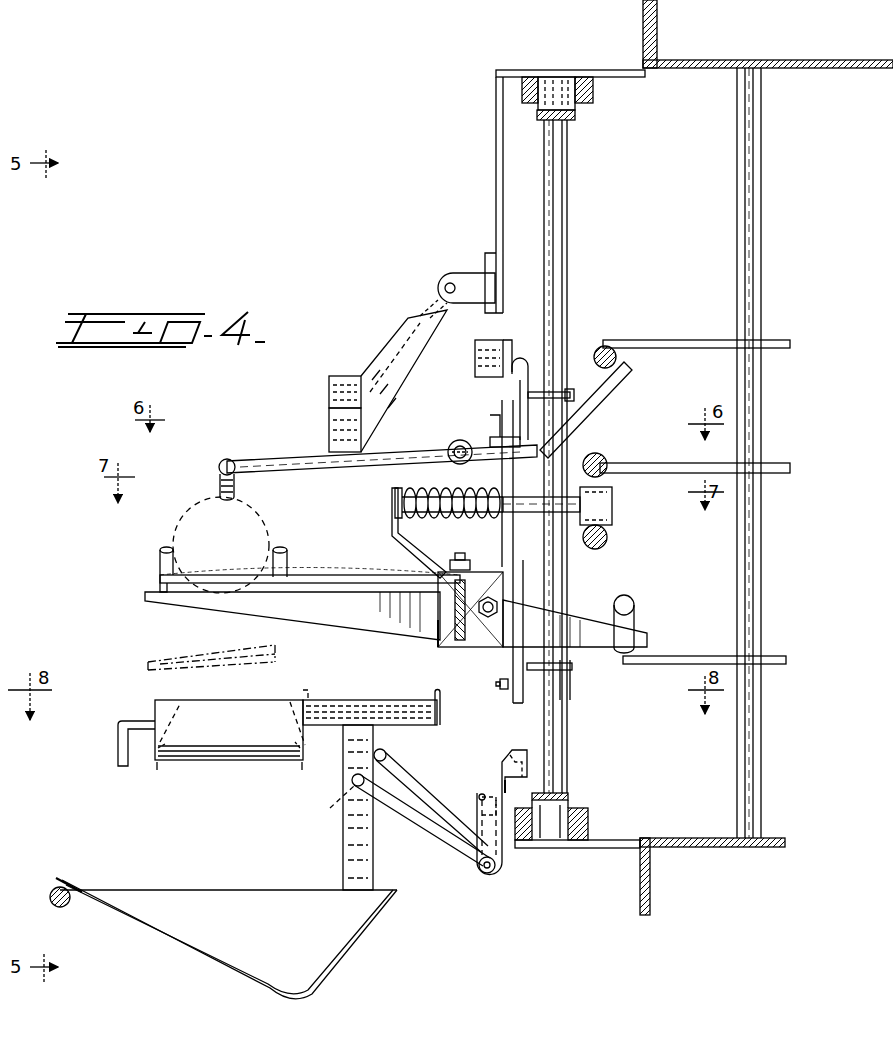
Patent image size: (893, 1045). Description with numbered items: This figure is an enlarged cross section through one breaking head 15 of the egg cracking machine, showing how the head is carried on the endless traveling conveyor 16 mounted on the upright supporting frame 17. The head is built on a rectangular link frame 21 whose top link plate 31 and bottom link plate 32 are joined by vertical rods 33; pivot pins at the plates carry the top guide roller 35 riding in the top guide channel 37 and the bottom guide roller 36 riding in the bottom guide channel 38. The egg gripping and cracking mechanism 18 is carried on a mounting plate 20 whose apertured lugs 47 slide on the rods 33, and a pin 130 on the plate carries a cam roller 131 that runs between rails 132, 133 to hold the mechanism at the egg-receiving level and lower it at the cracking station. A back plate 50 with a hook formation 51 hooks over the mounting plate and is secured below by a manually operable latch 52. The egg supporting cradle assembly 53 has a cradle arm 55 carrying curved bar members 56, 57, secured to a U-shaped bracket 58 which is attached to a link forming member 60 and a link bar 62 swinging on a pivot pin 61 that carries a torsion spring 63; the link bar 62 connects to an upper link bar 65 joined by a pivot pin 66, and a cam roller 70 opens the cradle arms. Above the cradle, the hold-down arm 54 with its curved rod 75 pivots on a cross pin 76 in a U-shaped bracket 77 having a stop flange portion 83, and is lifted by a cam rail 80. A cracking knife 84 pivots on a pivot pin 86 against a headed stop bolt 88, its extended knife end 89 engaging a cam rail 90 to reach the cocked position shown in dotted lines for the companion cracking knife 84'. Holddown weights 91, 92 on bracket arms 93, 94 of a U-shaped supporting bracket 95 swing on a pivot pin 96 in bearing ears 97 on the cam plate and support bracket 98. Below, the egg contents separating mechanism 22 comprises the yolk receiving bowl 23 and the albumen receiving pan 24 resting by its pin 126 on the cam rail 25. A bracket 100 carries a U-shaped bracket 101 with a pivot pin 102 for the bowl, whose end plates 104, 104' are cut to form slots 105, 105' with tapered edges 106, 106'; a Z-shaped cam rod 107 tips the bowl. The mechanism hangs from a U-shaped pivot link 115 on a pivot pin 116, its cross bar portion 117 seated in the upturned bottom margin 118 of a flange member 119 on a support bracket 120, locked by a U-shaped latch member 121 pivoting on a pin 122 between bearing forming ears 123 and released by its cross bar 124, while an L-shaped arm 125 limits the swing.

The breaking head 15 is at (396, 293).
The endless traveling conveyor 16 is at (515, 118).
The upright supporting frame 17 is at (645, 24).
The egg gripping and cracking mechanism 18 is at (232, 447).
The mounting plate 20 is at (530, 382).
The rectangular link frame 21 is at (560, 270).
The egg contents separating mechanism 22 is at (138, 711).
The yolk receiving bowl 23 is at (285, 700).
The albumen receiving pan 24 is at (275, 889).
The cam rail 25 is at (54, 900).
The top link plate 31 is at (568, 120).
The bottom link plate 32 is at (568, 796).
The vertical rods 33 is at (564, 196).
The top guide roller 35 is at (553, 78).
The bottom guide roller 36 is at (547, 832).
The top guide channel 37 is at (528, 77).
The bottom guide channel 38 is at (578, 842).
The apertured lugs 47 is at (570, 392).
The back plate 50 is at (528, 394).
The hook formation 51 is at (528, 364).
The manually operable latch 52 is at (502, 690).
The egg supporting cradle assembly 53 is at (156, 580).
The hold-down arm 54 is at (268, 462).
The cradle arm 55 is at (345, 577).
The curved bar member 56 is at (160, 560).
The curved bar member 57 is at (287, 560).
The U-shaped bracket 58 is at (456, 592).
The link forming member 60 is at (412, 546).
The pivot pin 61 is at (445, 519).
The link bar 62 is at (492, 552).
The torsion spring 63 is at (440, 497).
The link bar 65 is at (512, 352).
The pivot pin 66 is at (500, 420).
The cam roller 70 is at (476, 382).
The curved rod 75 is at (220, 486).
The cross pin 76 is at (448, 450).
The U-shaped bracket 77 is at (456, 444).
The cam rail 80 is at (612, 352).
The flange portion 83 is at (503, 440).
The cracking knife 84 is at (292, 619).
The cracking knife 84' is at (211, 644).
The pivot pin 86 is at (488, 618).
The headed stop bolt 88 is at (438, 638).
The knife end 89 is at (600, 612).
The cam rail 90 is at (634, 615).
The holddown weight 91 is at (329, 394).
The holddown weight 92 is at (329, 430).
The bracket arm 93 is at (384, 360).
The bracket arm 94 is at (410, 378).
The U-shaped supporting bracket 95 is at (440, 292).
The pivot pin 96 is at (449, 284).
The bearing ear 97 is at (467, 305).
The cam plate and support bracket 98 is at (496, 201).
The bracket 100 is at (347, 834).
The U-shaped bracket 101 is at (440, 700).
The pivot pin 102 is at (406, 701).
The end plate 104 is at (188, 723).
The end plate 104' is at (272, 723).
The slot 105 is at (144, 760).
The slot 105' is at (318, 746).
The tapered edge 106 is at (155, 782).
The tapered edge 106' is at (299, 773).
The Z-shaped cam rod 107 is at (118, 758).
The U-shaped pivot link 115 is at (424, 826).
The pivot pin 116 is at (330, 808).
The cross bar portion 117 is at (488, 876).
The upturned bottom margin 118 is at (480, 862).
The flange member 119 is at (494, 856).
The support bracket 120 is at (479, 801).
The U-shaped latch member 121 is at (490, 752).
The pin 122 is at (490, 784).
The bearing forming ears 123 is at (477, 792).
The cross bar 124 is at (515, 760).
The L-shaped arm 125 is at (389, 762).
The pin 126 is at (62, 880).
The pin 130 is at (584, 487).
The cam roller 131 is at (612, 505).
The rail 132 is at (601, 463).
The rail 133 is at (607, 537).